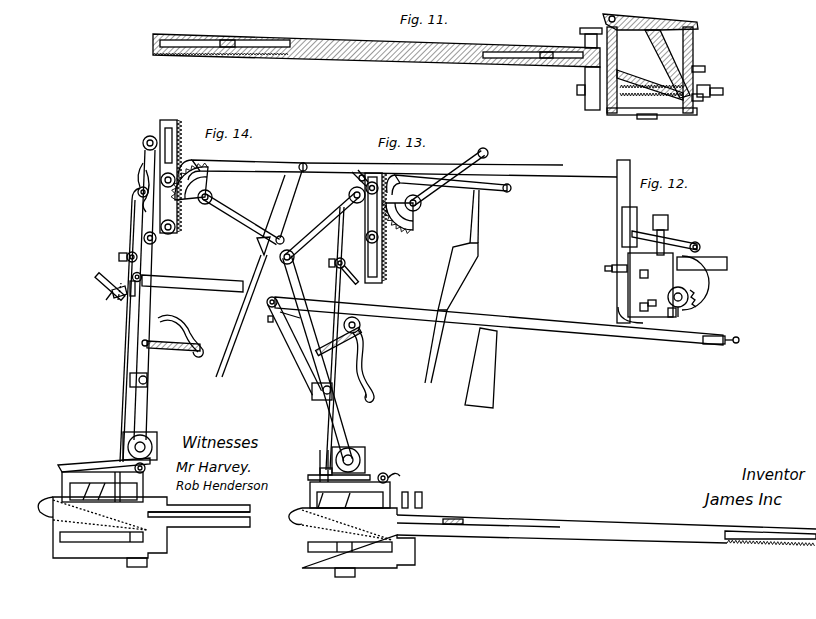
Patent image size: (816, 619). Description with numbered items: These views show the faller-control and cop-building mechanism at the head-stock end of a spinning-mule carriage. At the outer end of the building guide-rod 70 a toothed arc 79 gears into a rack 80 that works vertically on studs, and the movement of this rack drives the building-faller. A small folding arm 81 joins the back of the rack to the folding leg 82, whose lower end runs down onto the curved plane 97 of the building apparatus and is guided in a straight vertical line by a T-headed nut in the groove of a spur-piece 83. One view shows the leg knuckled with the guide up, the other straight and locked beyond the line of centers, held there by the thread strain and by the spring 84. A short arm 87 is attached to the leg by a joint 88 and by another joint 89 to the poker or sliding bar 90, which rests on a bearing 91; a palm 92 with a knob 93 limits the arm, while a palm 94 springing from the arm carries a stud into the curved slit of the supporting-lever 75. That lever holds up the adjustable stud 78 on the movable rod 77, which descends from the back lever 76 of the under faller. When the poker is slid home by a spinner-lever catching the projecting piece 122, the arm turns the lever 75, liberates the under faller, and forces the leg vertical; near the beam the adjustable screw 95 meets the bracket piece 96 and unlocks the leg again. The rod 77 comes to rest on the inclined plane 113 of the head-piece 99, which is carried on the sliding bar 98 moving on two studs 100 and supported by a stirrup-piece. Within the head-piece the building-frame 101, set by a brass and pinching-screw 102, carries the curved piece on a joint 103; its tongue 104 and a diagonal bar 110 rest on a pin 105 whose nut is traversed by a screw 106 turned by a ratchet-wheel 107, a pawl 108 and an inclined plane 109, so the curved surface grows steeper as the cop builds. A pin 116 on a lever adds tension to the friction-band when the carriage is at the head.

In FIG. 14, the building guide-rod 70 is at (242, 268).
In FIG. 13, the building guide-rod 70 is at (460, 176).
In FIG. 14, the supporting-lever 75 is at (149, 313).
In FIG. 13, the supporting-lever 75 is at (361, 334).
In FIG. 14, the back lever 76 is at (136, 187).
In FIG. 13, the back lever 76 is at (358, 178).
In FIG. 14, the movable rod 77 is at (124, 325).
In FIG. 13, the movable rod 77 is at (334, 341).
In FIG. 14, the adjustable stud 78 is at (132, 253).
In FIG. 13, the adjustable stud 78 is at (344, 261).
In FIG. 14, the toothed arc 79 is at (191, 183).
In FIG. 13, the toothed arc 79 is at (401, 214).
In FIG. 14, the rack 80 is at (175, 174).
In FIG. 13, the rack 80 is at (376, 236).
In FIG. 13, the small folding arm 81 is at (319, 228).
In FIG. 14, the folding leg 82 is at (148, 288).
In FIG. 13, the folding leg 82 is at (318, 359).
In FIG. 14, the spur-piece 83 is at (146, 446).
In FIG. 13, the spur-piece 83 is at (352, 459).
In FIG. 13, the spring 84 is at (267, 296).
In FIG. 14, the short arm 87 is at (137, 348).
In FIG. 13, the short arm 87 is at (307, 366).
In FIG. 14, the joint 88 is at (147, 380).
In FIG. 13, the joint 88 is at (329, 391).
In FIG. 14, the joint 89 is at (131, 281).
In FIG. 14, the poker or sliding bar 90 is at (192, 283).
In FIG. 13, the poker or sliding bar 90 is at (499, 321).
In FIG. 13, the bearing 91 is at (481, 368).
In FIG. 14, the palm 92 is at (116, 303).
In FIG. 13, the palm 92 is at (291, 321).
In FIG. 14, the knob 93 is at (103, 302).
In FIG. 13, the knob 93 is at (265, 317).
In FIG. 14, the palm 94 is at (173, 352).
In FIG. 13, the palm 94 is at (339, 343).
In FIG. 13, the adjustable screw 95 is at (727, 341).
In FIG. 14, the bracket piece 96 is at (135, 469).
In FIG. 14, the curved plane 97 is at (104, 464).
In FIG. 13, the curved plane 97 is at (345, 480).
In FIG. 14, the sliding bar 98 is at (199, 524).
In FIG. 13, the sliding bar 98 is at (606, 529).
In FIG. 14, the head-piece 99 is at (151, 527).
In FIG. 13, the head-piece 99 is at (358, 538).
In FIG. 11, the studs 100 is at (232, 40).
In FIG. 14, the building-frame 101 is at (102, 487).
In FIG. 13, the building-frame 101 is at (366, 479).
In FIG. 11, the brass and pinching-screw 102 is at (710, 70).
In FIG. 11, the joint 103 is at (650, 15).
In FIG. 13, the joint 103 is at (394, 471).
In FIG. 11, the tongue 104 is at (661, 64).
In FIG. 11, the pin 105 is at (651, 99).
In FIG. 11, the screw 106 is at (720, 91).
In FIG. 11, the ratchet-wheel 107 is at (649, 79).
In FIG. 12, the ratchet-wheel 107 is at (678, 318).
In FIG. 12, the pawl or ratchet 108 is at (698, 289).
In FIG. 12, the inclined plane 109 is at (661, 228).
In FIG. 11, the diagonal bar 110 is at (650, 78).
In FIG. 14, the inclined plane 113 is at (41, 501).
In FIG. 13, the inclined plane 113 is at (295, 508).
In FIG. 12, the pin 116 is at (711, 264).
In FIG. 13, the projecting piece 122 is at (445, 286).